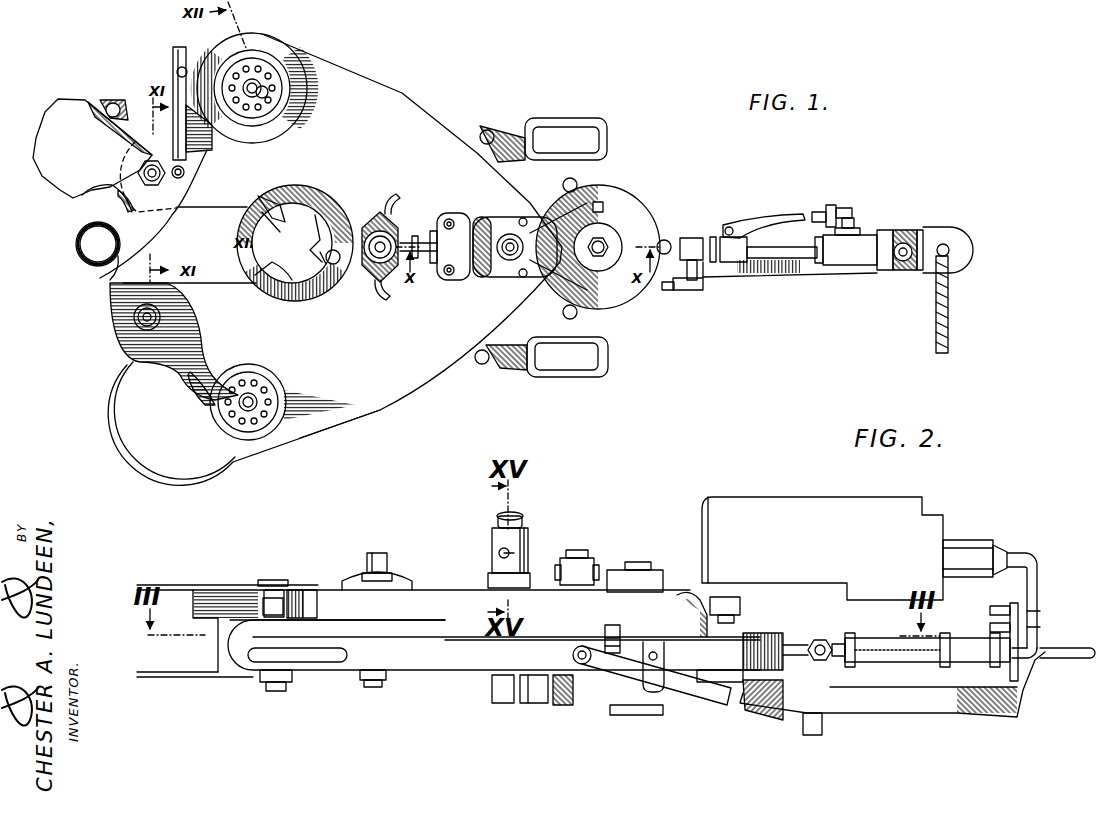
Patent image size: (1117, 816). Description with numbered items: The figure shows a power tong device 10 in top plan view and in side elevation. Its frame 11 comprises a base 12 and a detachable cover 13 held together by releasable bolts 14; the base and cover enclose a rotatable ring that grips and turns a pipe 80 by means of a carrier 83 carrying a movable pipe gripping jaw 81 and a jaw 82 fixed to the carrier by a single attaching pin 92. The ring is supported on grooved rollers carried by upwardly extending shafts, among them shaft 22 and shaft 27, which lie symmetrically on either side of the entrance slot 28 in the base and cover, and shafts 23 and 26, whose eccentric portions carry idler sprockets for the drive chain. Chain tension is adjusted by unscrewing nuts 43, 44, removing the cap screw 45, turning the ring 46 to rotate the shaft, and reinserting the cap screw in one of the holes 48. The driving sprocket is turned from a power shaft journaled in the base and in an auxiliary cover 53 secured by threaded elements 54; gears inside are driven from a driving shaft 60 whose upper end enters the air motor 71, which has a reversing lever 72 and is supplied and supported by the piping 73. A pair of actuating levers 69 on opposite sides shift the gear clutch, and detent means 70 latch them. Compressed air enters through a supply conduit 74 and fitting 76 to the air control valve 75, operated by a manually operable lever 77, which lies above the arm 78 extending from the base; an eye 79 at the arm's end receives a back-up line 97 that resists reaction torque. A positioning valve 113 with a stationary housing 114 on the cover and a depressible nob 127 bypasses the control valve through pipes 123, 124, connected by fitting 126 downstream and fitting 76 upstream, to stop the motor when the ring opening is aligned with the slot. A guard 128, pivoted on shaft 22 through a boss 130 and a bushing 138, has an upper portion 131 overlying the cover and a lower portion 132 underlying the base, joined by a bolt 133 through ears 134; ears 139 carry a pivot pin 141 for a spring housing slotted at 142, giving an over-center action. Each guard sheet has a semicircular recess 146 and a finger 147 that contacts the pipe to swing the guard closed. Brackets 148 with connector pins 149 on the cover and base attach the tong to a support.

In FIG. 1, the tong device 10 is at (488, 88).
In FIG. 2, the tong device 10 is at (419, 524).
In FIG. 1, the frame 11 is at (428, 110).
In FIG. 2, the frame 11 is at (330, 585).
In FIG. 2, the base 12 is at (442, 664).
In FIG. 1, the detachable cover 13 is at (358, 404).
In FIG. 2, the detachable cover 13 is at (435, 590).
In FIG. 1, the releasable bolts 14 is at (493, 130).
In FIG. 2, the releasable bolts 14 is at (606, 626).
In FIG. 1, the shaft 22 is at (138, 173).
In FIG. 1, the shaft 23 is at (276, 80).
In FIG. 1, the shaft 26 is at (212, 404).
In FIG. 1, the shaft 27 is at (140, 322).
In FIG. 1, the entrance slot 28 is at (204, 275).
In FIG. 2, the nut 43 is at (368, 688).
In FIG. 1, the nut 44 is at (252, 98).
In FIG. 2, the nut 44 is at (385, 556).
In FIG. 1, the cap screw 45 is at (258, 78).
In FIG. 1, the ring 46 is at (238, 112).
In FIG. 2, the ring 46 is at (375, 581).
In FIG. 1, the holes 48 is at (264, 106).
In FIG. 1, the auxiliary cover 53 is at (626, 198).
In FIG. 1, the threaded elements 54 is at (576, 184).
In FIG. 1, the driving shaft 60 is at (606, 240).
In FIG. 2, the driving shaft 60 is at (746, 616).
In FIG. 1, the actuating levers 69 is at (605, 127).
In FIG. 2, the actuating levers 69 is at (698, 692).
In FIG. 2, the detent means 70 is at (653, 652).
In FIG. 2, the air motor 71 is at (771, 497).
In FIG. 2, the actuating lever 72 is at (936, 516).
In FIG. 1, the piping 73 is at (924, 234).
In FIG. 2, the piping 73 is at (1042, 595).
In FIG. 2, the supply conduit 74 is at (805, 731).
In FIG. 1, the air control valve 75 is at (732, 242).
In FIG. 2, the air control valve 75 is at (877, 658).
In FIG. 1, the fitting 76 is at (702, 280).
In FIG. 2, the fitting 76 is at (823, 640).
In FIG. 1, the manually operable lever 77 is at (788, 216).
In FIG. 1, the arm 78 is at (796, 278).
In FIG. 2, the arm 78 is at (942, 714).
In FIG. 1, the eye 79 is at (950, 250).
In FIG. 2, the eye 79 is at (1075, 648).
In FIG. 1, the pipe 80 is at (76, 248).
In FIG. 1, the pipe gripping jaw 81 is at (38, 156).
In FIG. 1, the pipe gripping jaw 82 is at (325, 224).
In FIG. 1, the carrier 83 is at (330, 198).
In FIG. 1, the attaching pin 92 is at (340, 266).
In FIG. 1, the back-up line 97 is at (949, 300).
In FIG. 1, the positioning valve 113 is at (391, 196).
In FIG. 2, the positioning valve 113 is at (491, 569).
In FIG. 2, the stationary housing 114 is at (492, 549).
In FIG. 1, the pipe 123 is at (406, 206).
In FIG. 1, the pipe 124 is at (398, 300).
In FIG. 1, the fitting 126 is at (856, 245).
In FIG. 2, the fitting 126 is at (1030, 662).
In FIG. 1, the nob 127 is at (379, 282).
In FIG. 2, the nob 127 is at (523, 515).
In FIG. 1, the guard 128 is at (56, 189).
In FIG. 2, the guard 128 is at (242, 590).
In FIG. 2, the boss 130 is at (284, 588).
In FIG. 2, the upper portion 131 is at (176, 585).
In FIG. 2, the lower portion 132 is at (152, 678).
In FIG. 1, the bolt 133 is at (114, 102).
In FIG. 1, the ears 134 is at (104, 108).
In FIG. 2, the bushing 138 is at (270, 690).
In FIG. 1, the ears 139 is at (208, 156).
In FIG. 1, the pivot pin 141 is at (186, 178).
In FIG. 1, the slot 142 is at (178, 48).
In FIG. 1, the semicircular recess 146 is at (90, 206).
In FIG. 1, the finger 147 is at (110, 270).
In FIG. 2, the brackets 148 is at (565, 558).
In FIG. 1, the connector pin 149 is at (446, 216).
In FIG. 2, the connector pin 149 is at (590, 564).